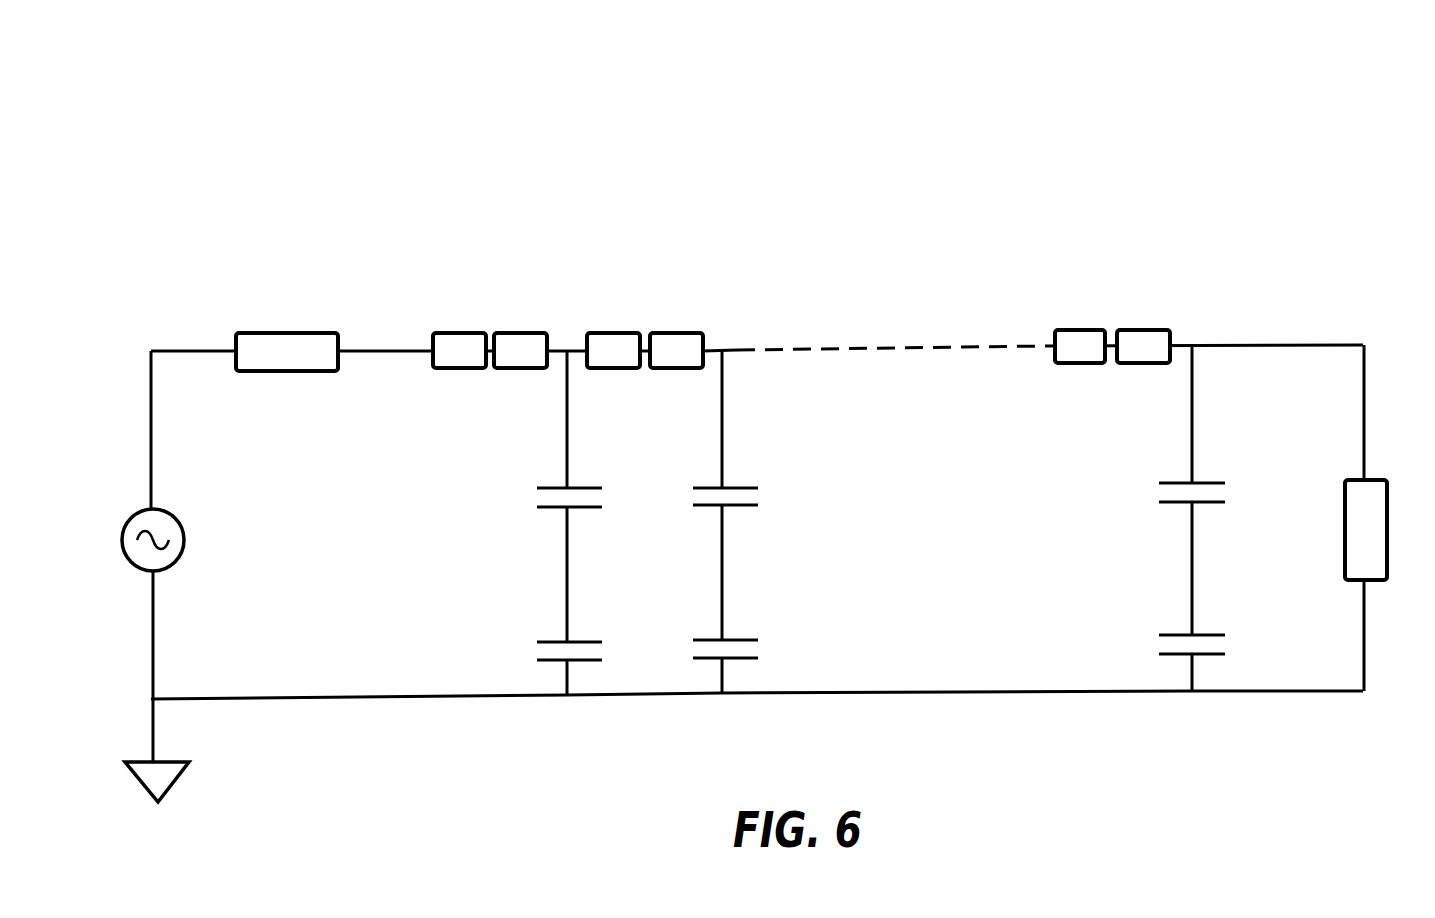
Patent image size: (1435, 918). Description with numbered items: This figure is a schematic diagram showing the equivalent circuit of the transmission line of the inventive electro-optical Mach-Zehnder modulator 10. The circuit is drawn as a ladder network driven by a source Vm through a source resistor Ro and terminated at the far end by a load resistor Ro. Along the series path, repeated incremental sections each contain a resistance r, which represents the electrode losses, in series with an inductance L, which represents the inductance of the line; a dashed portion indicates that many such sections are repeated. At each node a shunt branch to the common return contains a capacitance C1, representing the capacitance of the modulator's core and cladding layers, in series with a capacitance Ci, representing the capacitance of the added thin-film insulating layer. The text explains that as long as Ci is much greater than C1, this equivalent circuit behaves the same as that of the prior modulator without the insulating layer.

The Mach-Zehnder modulator 10 is at (1300, 246).
The voltage source Vm is at (178, 540).
The source/load resistor Ro is at (831, 436).
The electrode losses r is at (769, 333).
The inductance L is at (832, 333).
The capacitance of the layers C1 is at (901, 494).
The capacitance of the insulator Ci is at (897, 641).